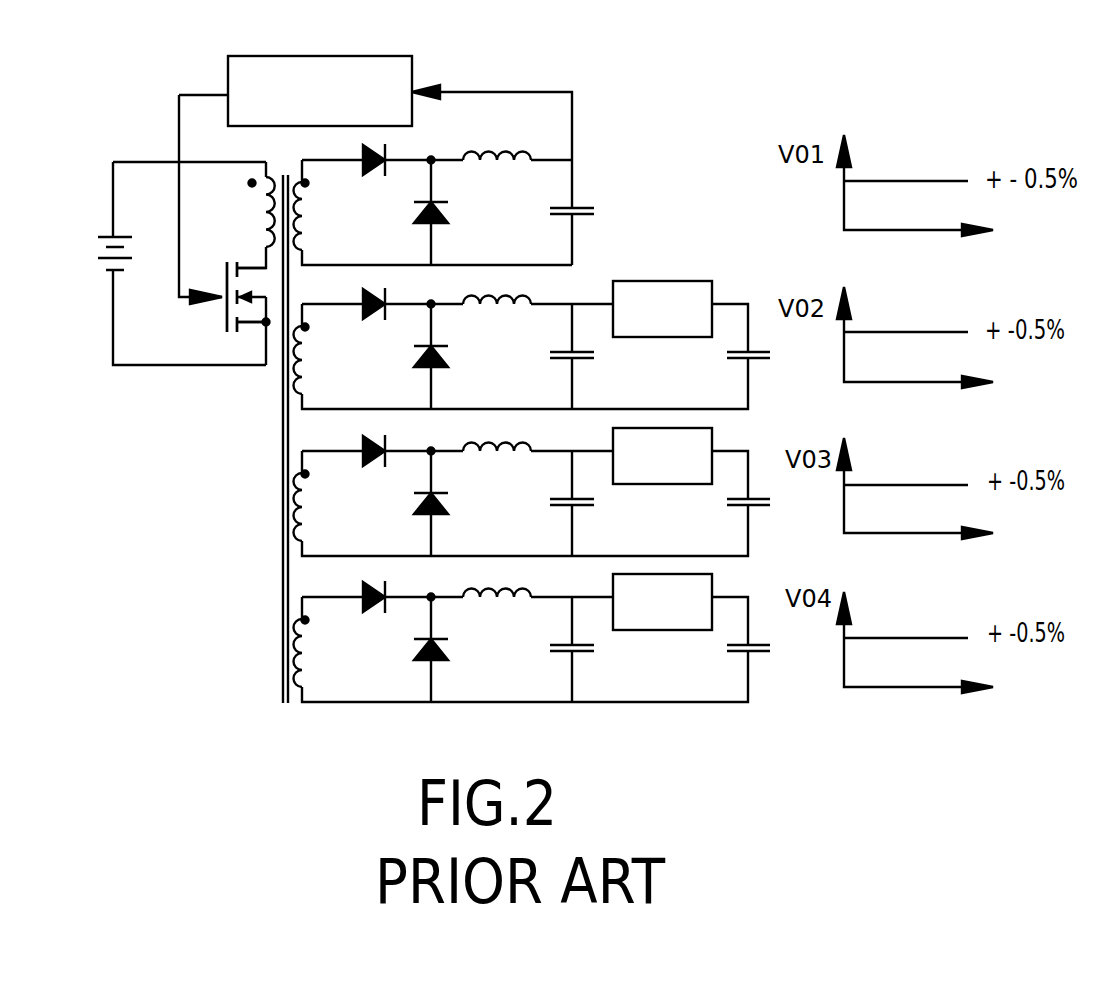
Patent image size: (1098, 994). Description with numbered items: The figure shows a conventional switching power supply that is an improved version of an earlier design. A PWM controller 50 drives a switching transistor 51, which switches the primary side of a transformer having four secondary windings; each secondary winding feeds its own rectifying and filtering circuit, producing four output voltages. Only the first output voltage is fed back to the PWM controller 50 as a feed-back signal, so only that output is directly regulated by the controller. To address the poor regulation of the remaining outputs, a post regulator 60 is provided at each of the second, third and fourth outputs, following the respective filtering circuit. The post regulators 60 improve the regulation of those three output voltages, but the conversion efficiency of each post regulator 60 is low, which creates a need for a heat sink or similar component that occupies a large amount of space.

The PWM controller 50 is at (380, 57).
The switching transistor 51 is at (235, 338).
The post regulator 60 is at (677, 290).